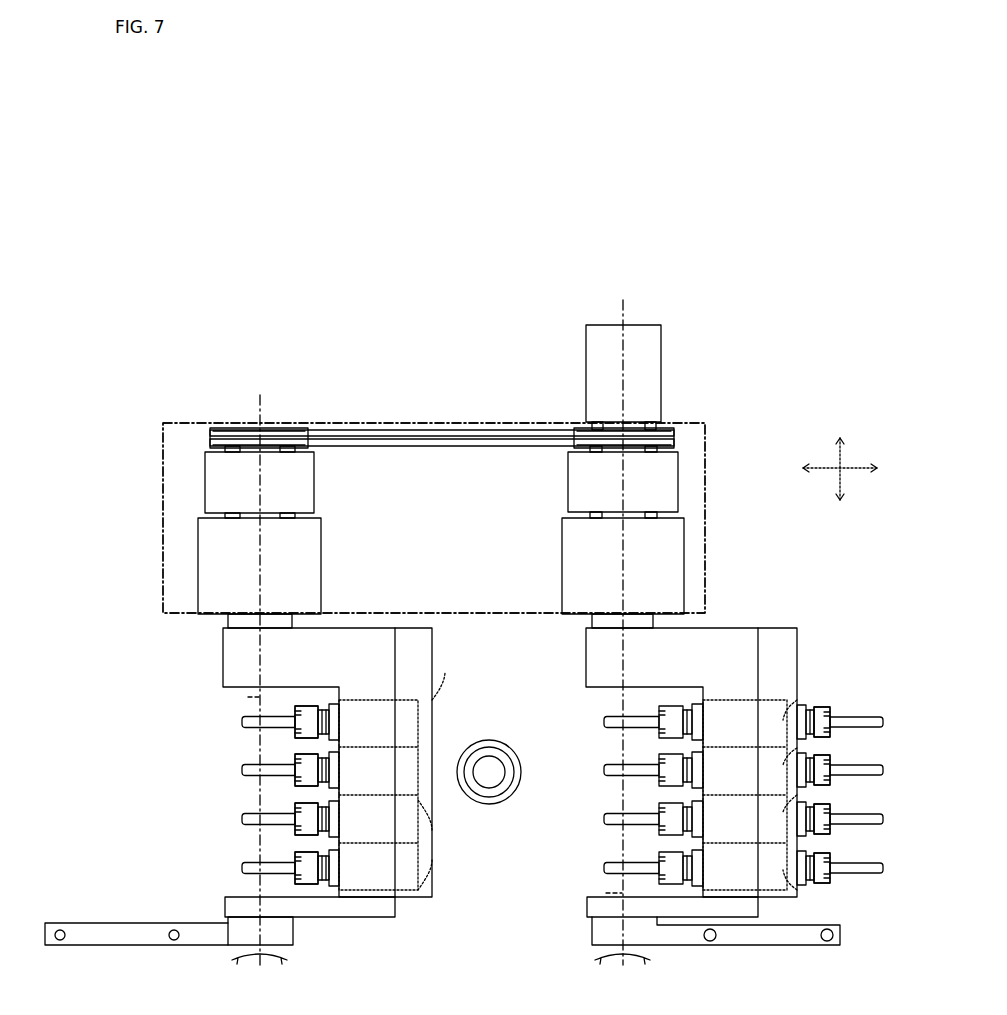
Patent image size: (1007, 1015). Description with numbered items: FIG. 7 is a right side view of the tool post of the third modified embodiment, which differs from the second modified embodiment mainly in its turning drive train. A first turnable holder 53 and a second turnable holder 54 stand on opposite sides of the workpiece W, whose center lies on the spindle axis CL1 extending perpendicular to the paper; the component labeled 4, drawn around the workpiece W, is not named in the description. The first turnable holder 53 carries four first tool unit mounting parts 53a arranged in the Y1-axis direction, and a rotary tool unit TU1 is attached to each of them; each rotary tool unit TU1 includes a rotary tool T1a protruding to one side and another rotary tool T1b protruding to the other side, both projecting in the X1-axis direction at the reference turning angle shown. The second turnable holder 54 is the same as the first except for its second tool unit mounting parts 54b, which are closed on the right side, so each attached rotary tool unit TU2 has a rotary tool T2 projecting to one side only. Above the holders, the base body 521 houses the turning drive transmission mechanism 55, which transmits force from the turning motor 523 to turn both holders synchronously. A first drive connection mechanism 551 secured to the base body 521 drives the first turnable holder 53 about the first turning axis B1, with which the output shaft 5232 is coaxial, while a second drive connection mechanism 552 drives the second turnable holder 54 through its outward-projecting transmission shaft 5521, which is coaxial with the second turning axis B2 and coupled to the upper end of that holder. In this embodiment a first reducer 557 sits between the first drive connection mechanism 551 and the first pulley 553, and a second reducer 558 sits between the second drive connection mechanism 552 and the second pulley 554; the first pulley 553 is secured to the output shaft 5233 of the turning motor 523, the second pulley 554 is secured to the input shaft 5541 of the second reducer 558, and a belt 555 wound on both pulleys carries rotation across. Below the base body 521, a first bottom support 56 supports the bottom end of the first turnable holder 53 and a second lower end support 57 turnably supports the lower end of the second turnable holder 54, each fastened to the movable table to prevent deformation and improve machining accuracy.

The workpiece holder / spindle 4 is at (489, 740).
The workpiece W is at (497, 787).
The spindle axis CL1 is at (489, 772).
The first turnable holder 53 is at (781, 628).
The first tool unit mounting part 53a is at (797, 700).
The second turnable holder 54 is at (223, 660).
The second tool unit mounting part 54b is at (437, 688).
The turning drive transmission mechanism 55 is at (692, 438).
The first drive connection mechanism 551 is at (562, 560).
The second drive connection mechanism 552 is at (198, 568).
The first pulley 553 is at (586, 426).
The second pulley 554 is at (282, 428).
The belt 555 is at (357, 428).
The first reducer 557 is at (568, 480).
The second reducer 558 is at (314, 478).
The input shaft 5541 is at (207, 450).
The transmission shaft 5521 is at (200, 516).
The output shaft 5232 is at (682, 515).
The output shaft 5233 is at (678, 441).
The base body 521 is at (443, 423).
The turning motor 523 is at (603, 325).
The first bottom support 56 is at (592, 935).
The second lower end support 57 is at (136, 923).
The first turning axis B1 is at (606, 893).
The second turning axis B2 is at (248, 697).
The rotary tool T1a is at (604, 722).
The rotary tool T1b is at (883, 720).
The rotary tool unit TU1 is at (830, 714).
The rotary tool T2 is at (242, 722).
The rotary tool unit TU2 is at (295, 756).
The X1-axis direction X1 is at (853, 468).
The Y1-axis direction Y1 is at (840, 458).